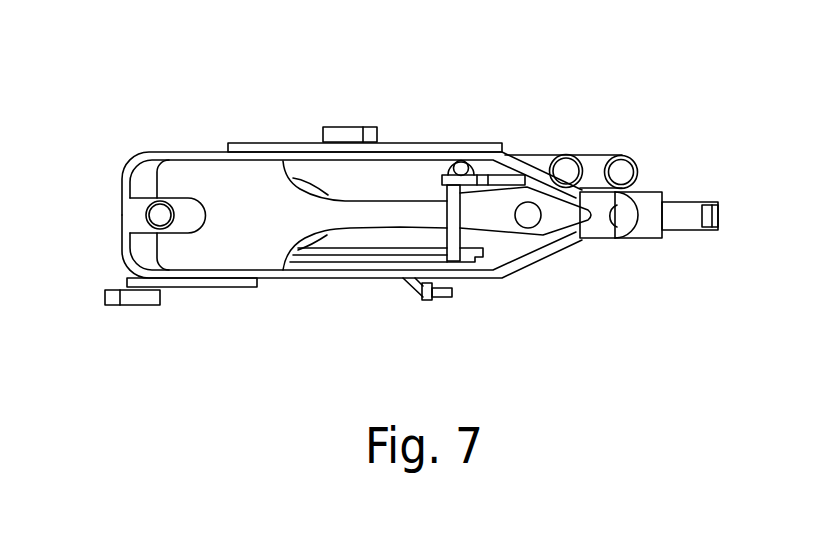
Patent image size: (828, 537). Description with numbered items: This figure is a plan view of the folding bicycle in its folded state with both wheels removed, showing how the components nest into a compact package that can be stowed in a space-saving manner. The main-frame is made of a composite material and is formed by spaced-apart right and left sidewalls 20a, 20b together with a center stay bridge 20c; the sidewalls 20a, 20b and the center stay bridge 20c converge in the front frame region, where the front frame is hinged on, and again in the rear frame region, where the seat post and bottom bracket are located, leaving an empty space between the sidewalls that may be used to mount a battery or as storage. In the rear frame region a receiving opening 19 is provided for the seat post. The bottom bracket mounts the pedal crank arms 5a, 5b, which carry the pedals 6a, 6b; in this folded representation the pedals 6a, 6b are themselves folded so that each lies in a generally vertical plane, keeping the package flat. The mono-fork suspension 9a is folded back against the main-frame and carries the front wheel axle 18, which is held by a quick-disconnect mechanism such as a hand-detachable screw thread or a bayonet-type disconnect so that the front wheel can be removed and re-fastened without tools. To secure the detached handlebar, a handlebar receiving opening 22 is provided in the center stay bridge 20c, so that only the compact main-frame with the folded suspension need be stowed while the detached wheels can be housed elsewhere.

The left sidewall 20b is at (200, 153).
The right sidewall 20a is at (345, 279).
The center stay bridge 20c is at (390, 213).
The receiving opening 19 is at (158, 215).
The pedal crank arm 5b is at (285, 150).
The pedal 6b is at (343, 135).
The pedal crank arm 5a is at (215, 288).
The pedal 6a is at (132, 297).
The front wheel axle 18 is at (453, 262).
The handlebar receiving opening 22 is at (528, 218).
The mono-fork suspension 9a is at (597, 172).